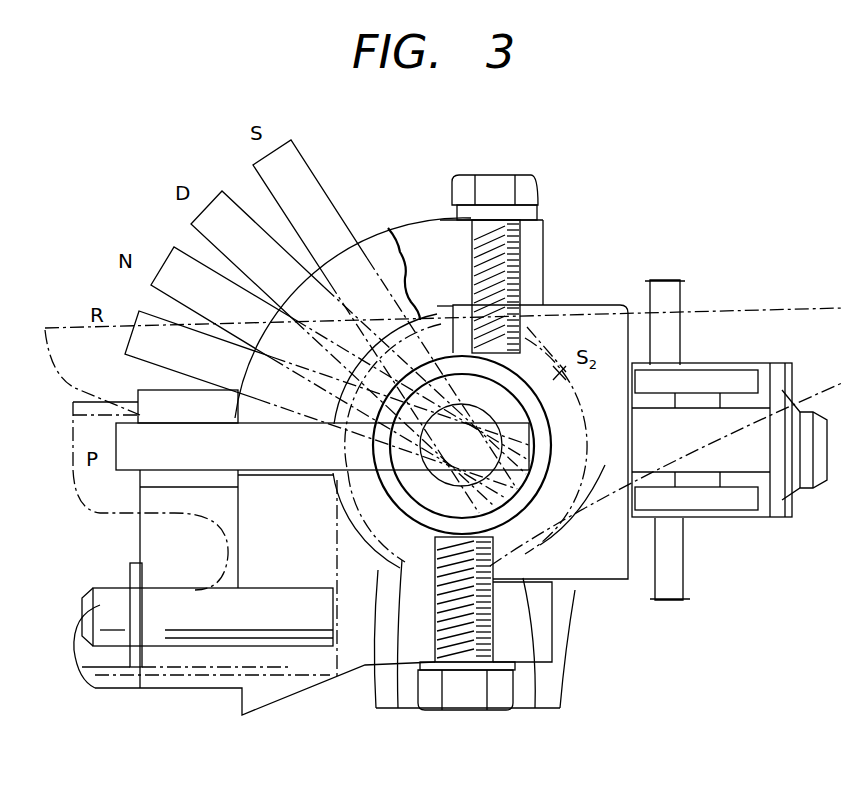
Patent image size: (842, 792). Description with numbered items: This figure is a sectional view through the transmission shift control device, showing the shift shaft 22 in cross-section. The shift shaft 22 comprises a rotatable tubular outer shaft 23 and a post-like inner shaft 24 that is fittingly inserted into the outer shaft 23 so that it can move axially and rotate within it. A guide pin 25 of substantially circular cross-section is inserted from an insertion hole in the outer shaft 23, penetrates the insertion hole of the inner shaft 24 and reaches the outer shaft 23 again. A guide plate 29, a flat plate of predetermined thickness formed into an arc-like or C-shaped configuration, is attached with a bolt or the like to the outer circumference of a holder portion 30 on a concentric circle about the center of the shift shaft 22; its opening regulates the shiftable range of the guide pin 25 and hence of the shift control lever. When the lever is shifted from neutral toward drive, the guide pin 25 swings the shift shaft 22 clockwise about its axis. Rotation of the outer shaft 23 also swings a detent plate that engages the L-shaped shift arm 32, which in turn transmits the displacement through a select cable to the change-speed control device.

The shift shaft 22 is at (415, 548).
The outer shaft 23 is at (523, 500).
The inner shaft 24 is at (425, 498).
The guide pin 25 is at (123, 462).
The guide plate 29 is at (412, 237).
The holder portion 30 is at (560, 305).
The shift arm 32 is at (680, 585).